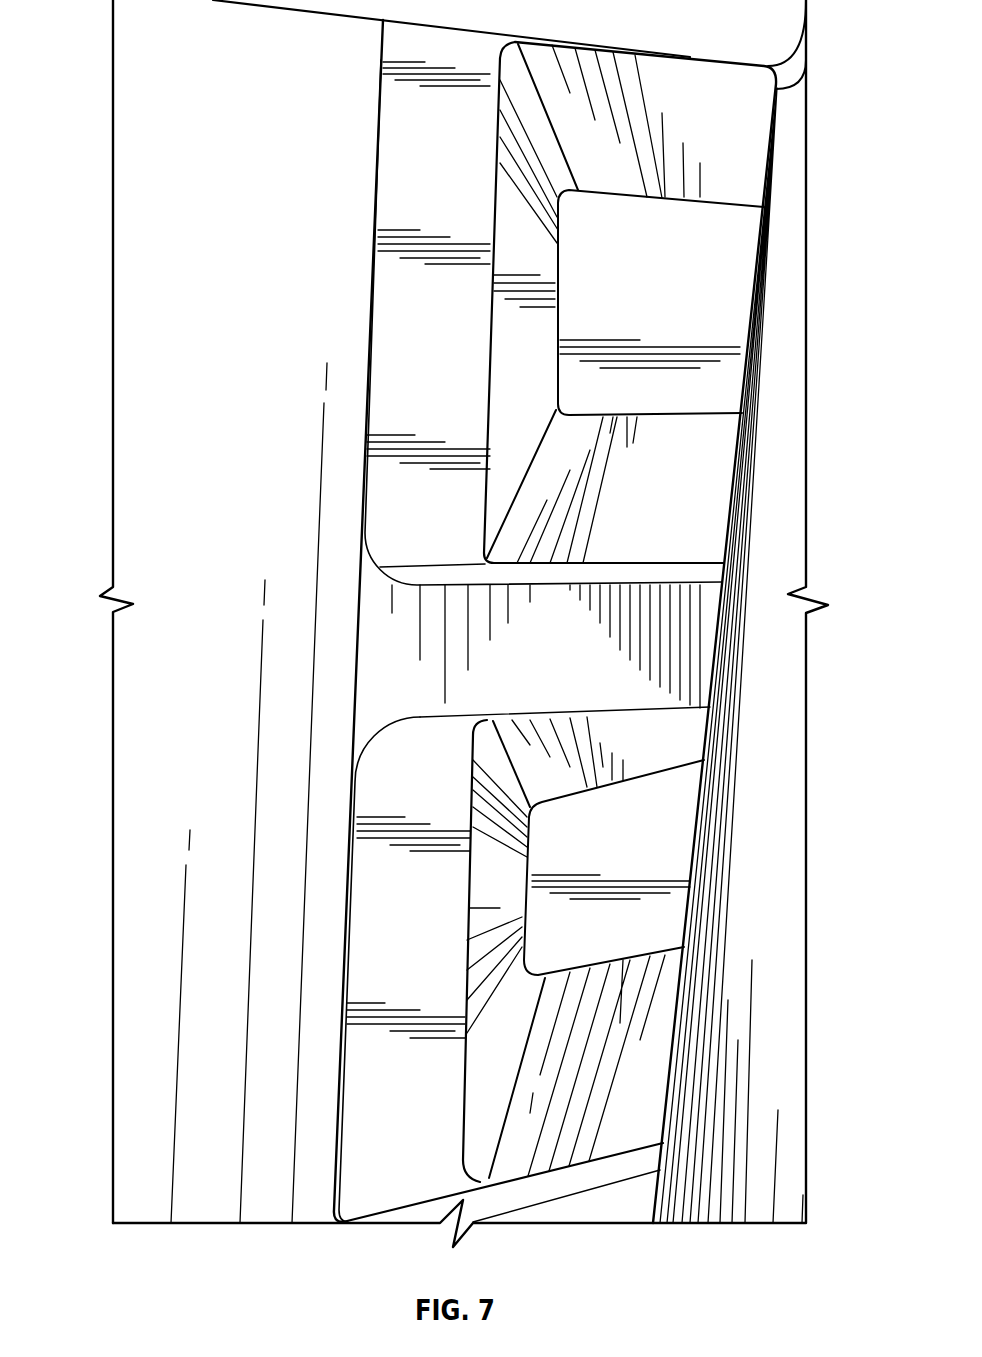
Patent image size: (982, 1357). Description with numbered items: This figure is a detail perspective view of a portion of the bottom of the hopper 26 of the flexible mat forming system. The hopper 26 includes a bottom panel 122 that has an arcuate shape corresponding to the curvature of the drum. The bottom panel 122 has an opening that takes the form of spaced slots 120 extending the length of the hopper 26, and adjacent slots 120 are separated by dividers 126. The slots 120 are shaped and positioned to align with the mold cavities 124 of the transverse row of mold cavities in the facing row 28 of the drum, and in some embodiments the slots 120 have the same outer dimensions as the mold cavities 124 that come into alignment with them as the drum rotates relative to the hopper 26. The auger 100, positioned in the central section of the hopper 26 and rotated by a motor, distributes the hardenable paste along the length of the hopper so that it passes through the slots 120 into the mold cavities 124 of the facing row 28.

The hopper 26 is at (113, 423).
The facing row 28 is at (508, 611).
The auger 100 is at (797, 443).
The slots 120 is at (345, 1042).
The bottom panel 122 is at (295, 1098).
The mold cavities 124 is at (471, 170).
The dividers 126 is at (650, 583).